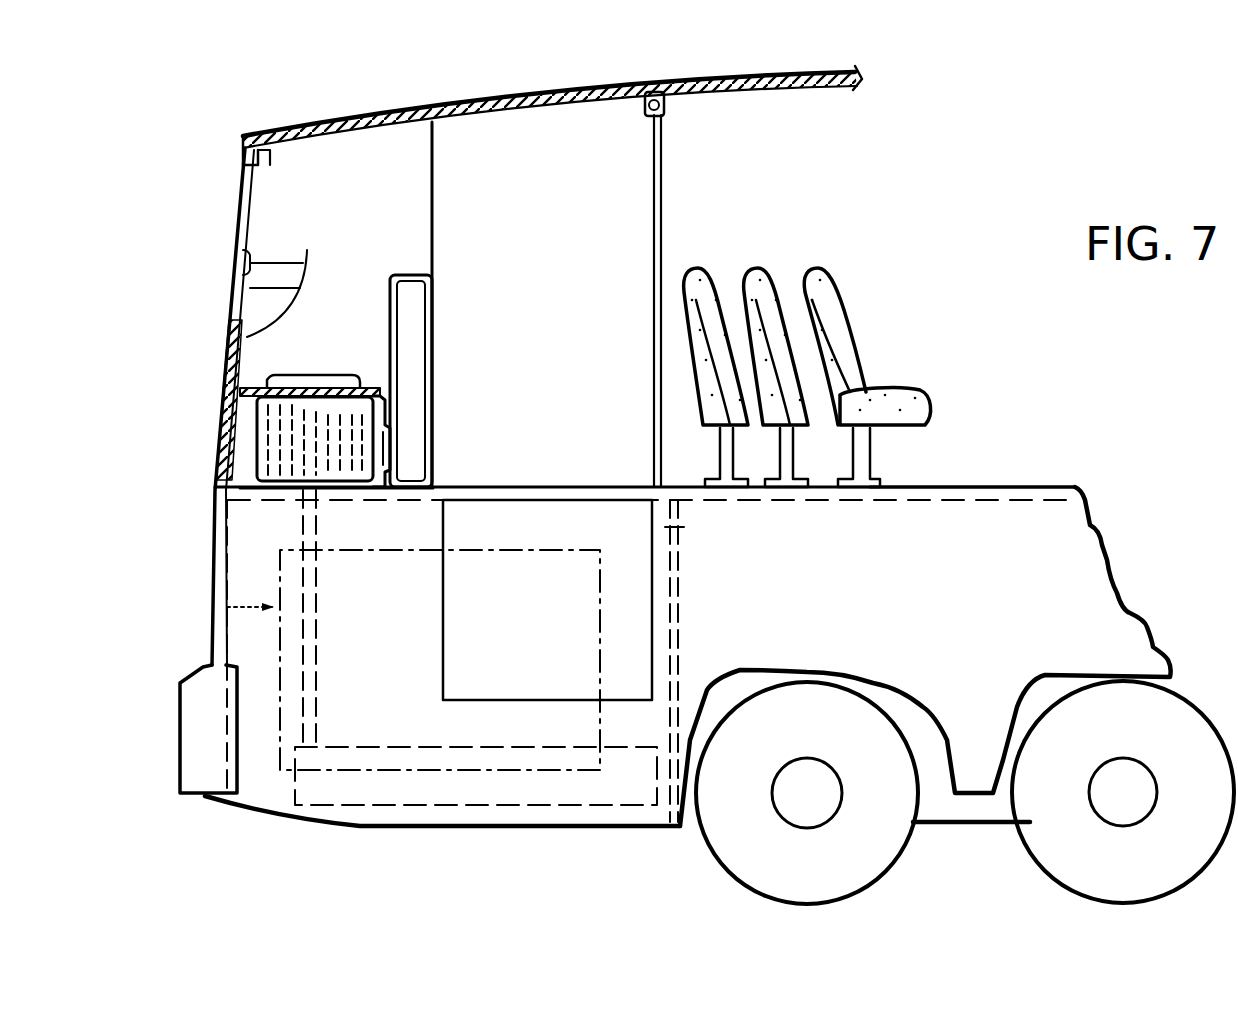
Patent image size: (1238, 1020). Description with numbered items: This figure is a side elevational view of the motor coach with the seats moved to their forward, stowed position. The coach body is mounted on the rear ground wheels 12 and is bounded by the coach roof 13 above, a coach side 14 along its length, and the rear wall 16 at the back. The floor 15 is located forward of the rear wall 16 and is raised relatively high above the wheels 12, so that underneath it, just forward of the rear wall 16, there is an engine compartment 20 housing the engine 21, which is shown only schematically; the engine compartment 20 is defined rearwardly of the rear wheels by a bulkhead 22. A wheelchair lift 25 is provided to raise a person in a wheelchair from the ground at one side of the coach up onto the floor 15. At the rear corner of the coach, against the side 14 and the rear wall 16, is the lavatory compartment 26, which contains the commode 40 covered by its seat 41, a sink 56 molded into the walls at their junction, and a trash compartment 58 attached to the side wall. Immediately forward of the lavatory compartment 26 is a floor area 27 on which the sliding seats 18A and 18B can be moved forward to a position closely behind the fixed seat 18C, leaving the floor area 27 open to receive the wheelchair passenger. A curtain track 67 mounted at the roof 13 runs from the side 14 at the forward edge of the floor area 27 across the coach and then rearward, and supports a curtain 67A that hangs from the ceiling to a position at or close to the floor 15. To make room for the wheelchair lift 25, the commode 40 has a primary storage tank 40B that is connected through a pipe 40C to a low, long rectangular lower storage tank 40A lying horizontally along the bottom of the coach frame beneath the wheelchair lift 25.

The rear ground wheels 12 is at (738, 882).
The coach roof 13 is at (528, 95).
The coach side 14 is at (1068, 590).
The floor 15 is at (985, 485).
The rear wall 16 is at (212, 520).
The sliding seat 18A is at (683, 268).
The sliding seat 18B is at (752, 268).
The fixed seat 18C is at (845, 310).
The engine compartment 20 is at (618, 537).
The engine 21 is at (227, 607).
The bulkhead 22 is at (680, 582).
The wheelchair lift 25 is at (647, 625).
The lavatory compartment 26 is at (408, 242).
The floor area 27 is at (563, 472).
The commode 40 is at (356, 414).
The lower storage tank 40A is at (445, 815).
The primary storage tank 40B is at (330, 470).
The pipe 40C is at (320, 583).
The seat 41 is at (318, 375).
The sink 56 is at (312, 262).
The trash compartment 58 is at (430, 333).
The curtain track 67 is at (667, 107).
The curtain 67A is at (653, 180).